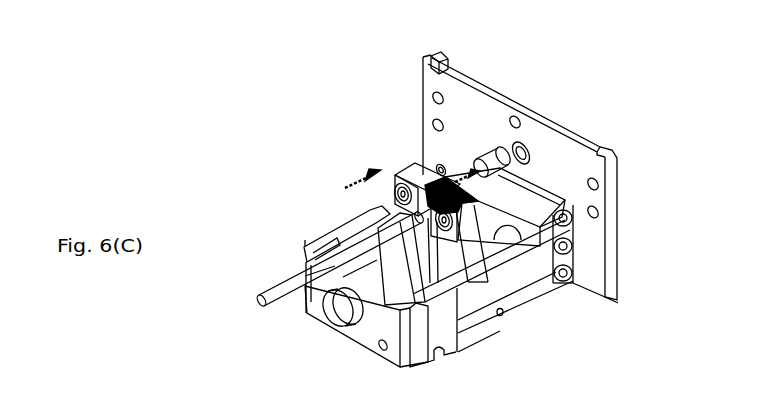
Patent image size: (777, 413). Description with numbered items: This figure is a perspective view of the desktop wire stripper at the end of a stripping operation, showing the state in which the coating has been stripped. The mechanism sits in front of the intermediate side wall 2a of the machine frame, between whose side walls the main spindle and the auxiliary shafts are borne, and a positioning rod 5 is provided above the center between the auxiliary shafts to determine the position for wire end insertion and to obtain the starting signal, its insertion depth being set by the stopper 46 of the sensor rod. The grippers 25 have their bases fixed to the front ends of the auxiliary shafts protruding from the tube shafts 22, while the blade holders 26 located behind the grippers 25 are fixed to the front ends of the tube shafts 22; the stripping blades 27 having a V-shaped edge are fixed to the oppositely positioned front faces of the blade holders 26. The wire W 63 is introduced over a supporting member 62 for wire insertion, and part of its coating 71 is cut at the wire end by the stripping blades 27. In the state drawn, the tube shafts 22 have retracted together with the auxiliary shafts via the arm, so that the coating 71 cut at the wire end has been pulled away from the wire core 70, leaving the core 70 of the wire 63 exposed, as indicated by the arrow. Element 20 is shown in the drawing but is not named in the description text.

The intermediate side wall 2a is at (452, 100).
The positioning rod 5 is at (515, 140).
The stopper 46 is at (487, 150).
The holder block 20 is at (397, 165).
The stripping blade 27 is at (390, 192).
The core 70 is at (397, 185).
The gripper 25 is at (340, 231).
The coating 71 is at (292, 289).
The wire W 63 is at (277, 304).
The tube shaft 22 is at (498, 240).
The blade holder 26 is at (480, 240).
The supporting member for wire insertion 62 is at (350, 318).